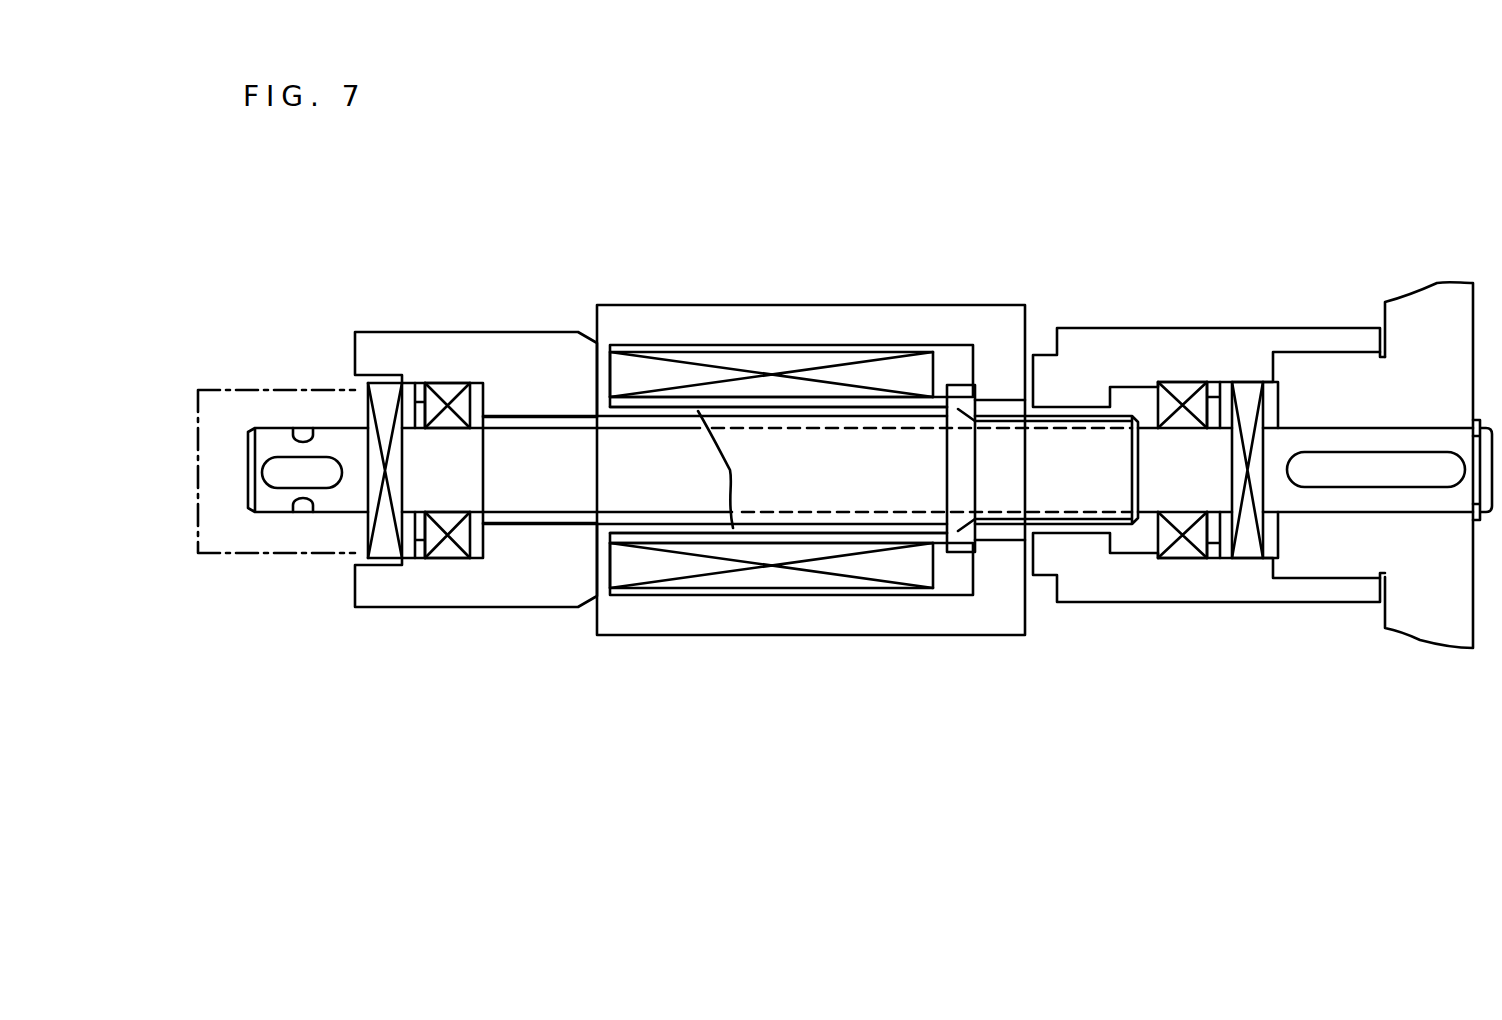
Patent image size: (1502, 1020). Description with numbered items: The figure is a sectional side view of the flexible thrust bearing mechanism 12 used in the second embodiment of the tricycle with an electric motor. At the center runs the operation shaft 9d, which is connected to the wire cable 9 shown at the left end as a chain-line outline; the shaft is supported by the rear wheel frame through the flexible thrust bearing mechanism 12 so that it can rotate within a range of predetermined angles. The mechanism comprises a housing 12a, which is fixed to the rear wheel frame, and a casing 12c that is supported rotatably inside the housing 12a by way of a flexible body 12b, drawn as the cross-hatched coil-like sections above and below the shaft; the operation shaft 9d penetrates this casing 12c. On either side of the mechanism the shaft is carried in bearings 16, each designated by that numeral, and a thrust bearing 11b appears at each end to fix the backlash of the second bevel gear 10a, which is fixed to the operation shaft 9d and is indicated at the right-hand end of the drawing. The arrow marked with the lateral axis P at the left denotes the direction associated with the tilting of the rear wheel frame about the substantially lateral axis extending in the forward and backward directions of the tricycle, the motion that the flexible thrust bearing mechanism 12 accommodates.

The wire cable 9 is at (268, 386).
The operation shaft 9d is at (510, 492).
The thrust bearing 11b is at (384, 545).
The bearing 16 is at (458, 553).
The flexible thrust bearing mechanism 12 is at (811, 409).
The housing 12a is at (865, 305).
The flexible body 12b is at (713, 362).
The casing 12c is at (632, 397).
The second bevel gear 10a is at (1397, 320).
The lateral axis P is at (191, 475).